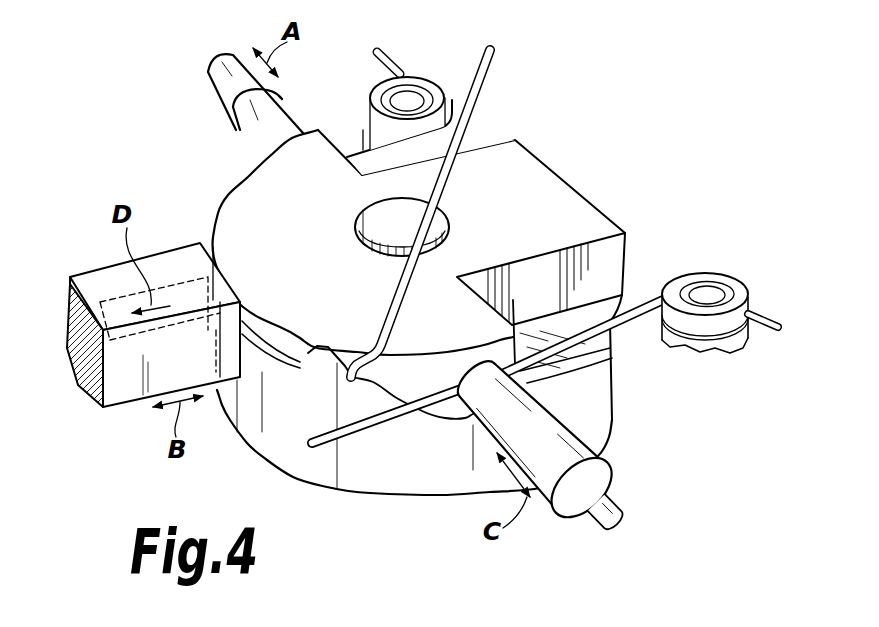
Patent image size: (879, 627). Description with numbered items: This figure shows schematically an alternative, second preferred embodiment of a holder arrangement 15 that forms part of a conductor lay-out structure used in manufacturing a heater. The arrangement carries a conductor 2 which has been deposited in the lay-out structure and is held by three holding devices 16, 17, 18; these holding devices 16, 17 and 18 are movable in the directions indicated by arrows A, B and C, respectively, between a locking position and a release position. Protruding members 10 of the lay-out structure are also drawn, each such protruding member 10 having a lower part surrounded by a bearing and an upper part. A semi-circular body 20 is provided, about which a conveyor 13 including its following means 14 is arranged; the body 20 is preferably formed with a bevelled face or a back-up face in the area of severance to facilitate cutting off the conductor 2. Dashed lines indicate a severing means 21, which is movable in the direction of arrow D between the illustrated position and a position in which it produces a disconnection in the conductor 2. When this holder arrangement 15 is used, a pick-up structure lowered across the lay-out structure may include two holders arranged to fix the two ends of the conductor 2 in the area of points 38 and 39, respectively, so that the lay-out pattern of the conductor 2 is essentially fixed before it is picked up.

The conductor 2 is at (483, 81).
The protruding member 10 is at (428, 76).
The conveyor 13 is at (610, 422).
The following means 14 is at (327, 368).
The holder arrangement 15 is at (416, 269).
The holding device 16 is at (230, 127).
The holding device 17 is at (120, 408).
The holding device 18 is at (617, 480).
The semi-circular body 20 is at (222, 193).
The severing means 21 is at (92, 280).
The point 38 is at (578, 315).
The point 39 is at (363, 142).